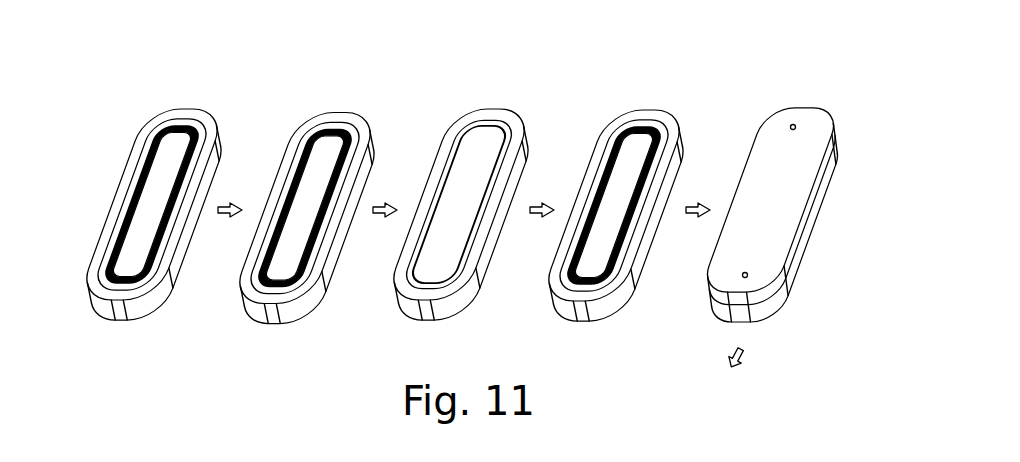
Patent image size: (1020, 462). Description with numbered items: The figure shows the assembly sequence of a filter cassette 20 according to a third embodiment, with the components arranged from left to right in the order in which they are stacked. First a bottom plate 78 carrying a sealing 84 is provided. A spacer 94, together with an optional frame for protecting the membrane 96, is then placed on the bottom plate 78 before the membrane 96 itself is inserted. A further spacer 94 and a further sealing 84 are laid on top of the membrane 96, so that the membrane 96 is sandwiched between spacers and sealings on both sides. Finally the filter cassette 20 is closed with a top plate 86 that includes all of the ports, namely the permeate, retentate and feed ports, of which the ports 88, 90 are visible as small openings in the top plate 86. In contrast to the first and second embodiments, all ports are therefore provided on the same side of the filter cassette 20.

The filter cassette 20 is at (797, 205).
The bottom plate 78 is at (124, 150).
The sealing 84 is at (178, 130).
The top plate 86 is at (773, 135).
The port 88 is at (796, 125).
The port 90 is at (747, 274).
The spacer 94 is at (327, 153).
The membrane 96 is at (477, 155).